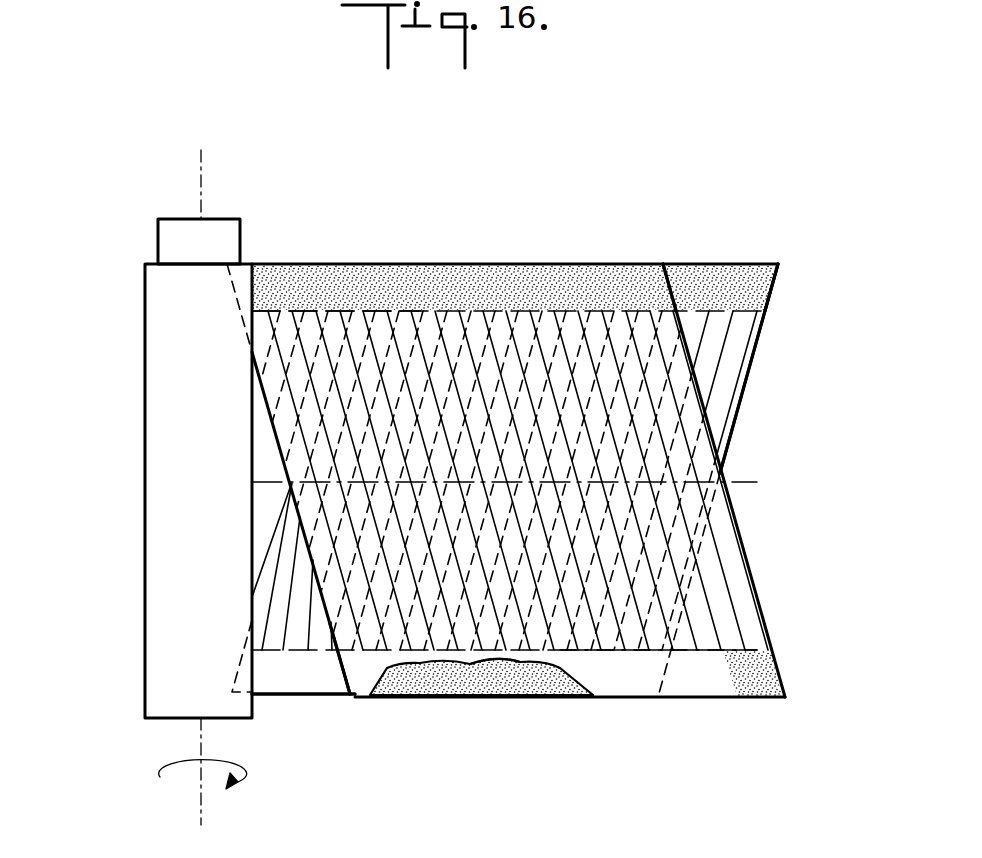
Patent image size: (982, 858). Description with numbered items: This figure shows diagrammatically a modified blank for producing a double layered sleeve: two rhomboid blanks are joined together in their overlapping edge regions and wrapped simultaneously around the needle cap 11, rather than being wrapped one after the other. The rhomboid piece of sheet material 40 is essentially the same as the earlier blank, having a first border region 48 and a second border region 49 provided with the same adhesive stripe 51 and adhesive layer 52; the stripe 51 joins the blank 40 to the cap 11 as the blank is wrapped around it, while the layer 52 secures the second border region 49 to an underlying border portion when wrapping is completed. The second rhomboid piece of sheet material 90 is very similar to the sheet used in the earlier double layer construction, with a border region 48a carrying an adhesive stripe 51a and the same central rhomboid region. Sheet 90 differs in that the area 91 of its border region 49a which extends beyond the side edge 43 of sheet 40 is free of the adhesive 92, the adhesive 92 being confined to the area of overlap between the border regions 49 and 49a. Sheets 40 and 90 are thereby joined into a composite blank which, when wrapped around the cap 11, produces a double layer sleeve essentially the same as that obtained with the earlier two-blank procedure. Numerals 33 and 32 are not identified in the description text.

The needle cap 11 is at (177, 219).
The roller 33 is at (180, 264).
The roller shaft 32 is at (162, 719).
The rhomboid piece of sheet material 40 is at (769, 597).
The rhomboid piece of sheet material 90 is at (758, 370).
The first border region 48 is at (452, 283).
The border region 48a is at (697, 283).
The adhesive stripe 51 is at (373, 283).
The adhesive stripe 51a is at (752, 278).
The second border region 49 is at (643, 680).
The border region 49a is at (448, 673).
The pressure sensitive adhesive layer 52 is at (757, 687).
The area 91 is at (306, 680).
The side edge 43 is at (347, 663).
The adhesive 92 is at (530, 683).